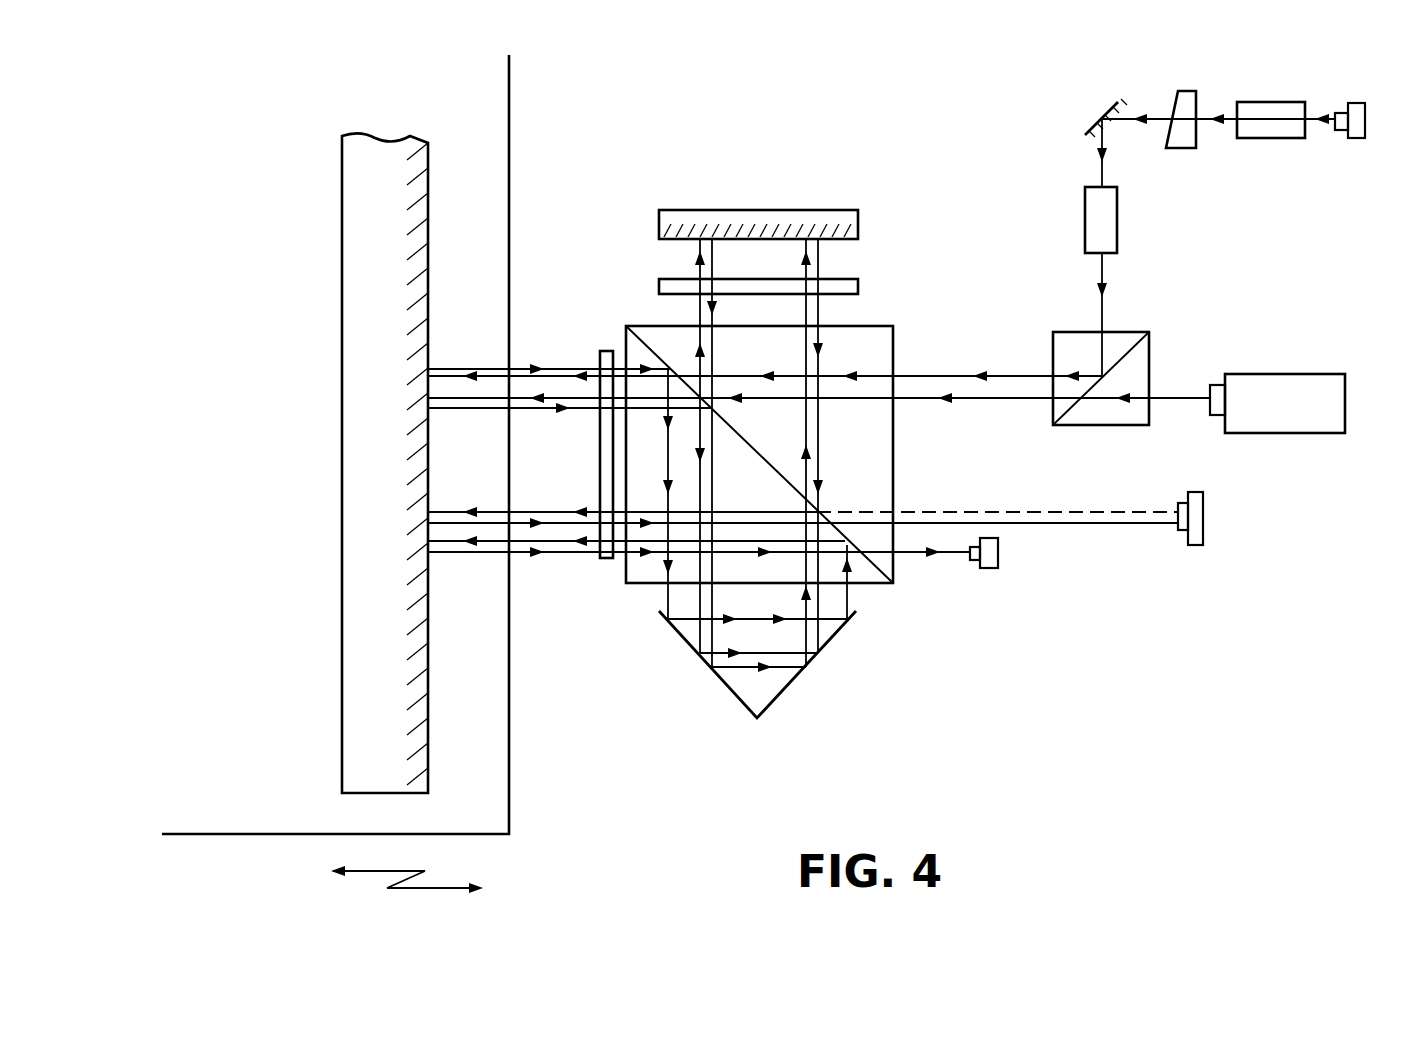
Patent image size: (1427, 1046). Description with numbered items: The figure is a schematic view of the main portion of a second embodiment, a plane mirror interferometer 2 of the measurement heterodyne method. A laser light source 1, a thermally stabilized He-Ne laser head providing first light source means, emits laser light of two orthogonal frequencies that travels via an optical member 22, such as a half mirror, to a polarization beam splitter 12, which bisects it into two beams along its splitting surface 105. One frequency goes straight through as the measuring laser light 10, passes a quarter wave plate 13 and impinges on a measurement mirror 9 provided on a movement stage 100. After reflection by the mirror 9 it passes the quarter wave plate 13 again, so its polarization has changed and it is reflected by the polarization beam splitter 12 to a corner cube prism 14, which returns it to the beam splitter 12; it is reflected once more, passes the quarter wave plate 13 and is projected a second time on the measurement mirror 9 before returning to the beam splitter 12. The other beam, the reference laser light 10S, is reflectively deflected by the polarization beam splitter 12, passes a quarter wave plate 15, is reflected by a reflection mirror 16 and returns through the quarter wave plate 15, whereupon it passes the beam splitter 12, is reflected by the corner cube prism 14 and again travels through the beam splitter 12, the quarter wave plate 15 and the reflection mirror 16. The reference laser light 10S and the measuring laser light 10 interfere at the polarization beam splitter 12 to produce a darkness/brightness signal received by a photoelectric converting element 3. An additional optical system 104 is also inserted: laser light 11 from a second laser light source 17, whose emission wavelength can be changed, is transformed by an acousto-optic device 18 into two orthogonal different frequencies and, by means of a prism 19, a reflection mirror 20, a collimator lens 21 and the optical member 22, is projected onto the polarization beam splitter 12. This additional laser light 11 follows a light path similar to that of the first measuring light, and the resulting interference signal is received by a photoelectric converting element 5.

The laser light source 1 is at (1300, 373).
The interferometer 2 is at (747, 207).
The photoelectric converting element 3 is at (1205, 522).
The photoelectric converting element 5 is at (1000, 560).
The measurement mirror 9 is at (342, 730).
The measuring laser light 10 is at (535, 408).
The reference laser light 10S is at (700, 272).
The laser light 11 is at (565, 366).
The polarization beam splitter 12 is at (893, 487).
The quarter wave plate 13 is at (604, 560).
The corner cube prism 14 is at (785, 700).
The quarter wave plate 15 is at (860, 292).
The reflection mirror 16 is at (860, 237).
The laser light source 17 is at (1366, 122).
The acousto-optic device 18 is at (1275, 140).
The prism 19 is at (1186, 150).
The reflection mirror 20 is at (1085, 125).
The collimator lens 21 is at (1117, 215).
The optical member 22 is at (1150, 362).
The movement stage 100 is at (262, 834).
The additional optical system 104 is at (1232, 82).
The beam splitting surface 105 is at (818, 460).